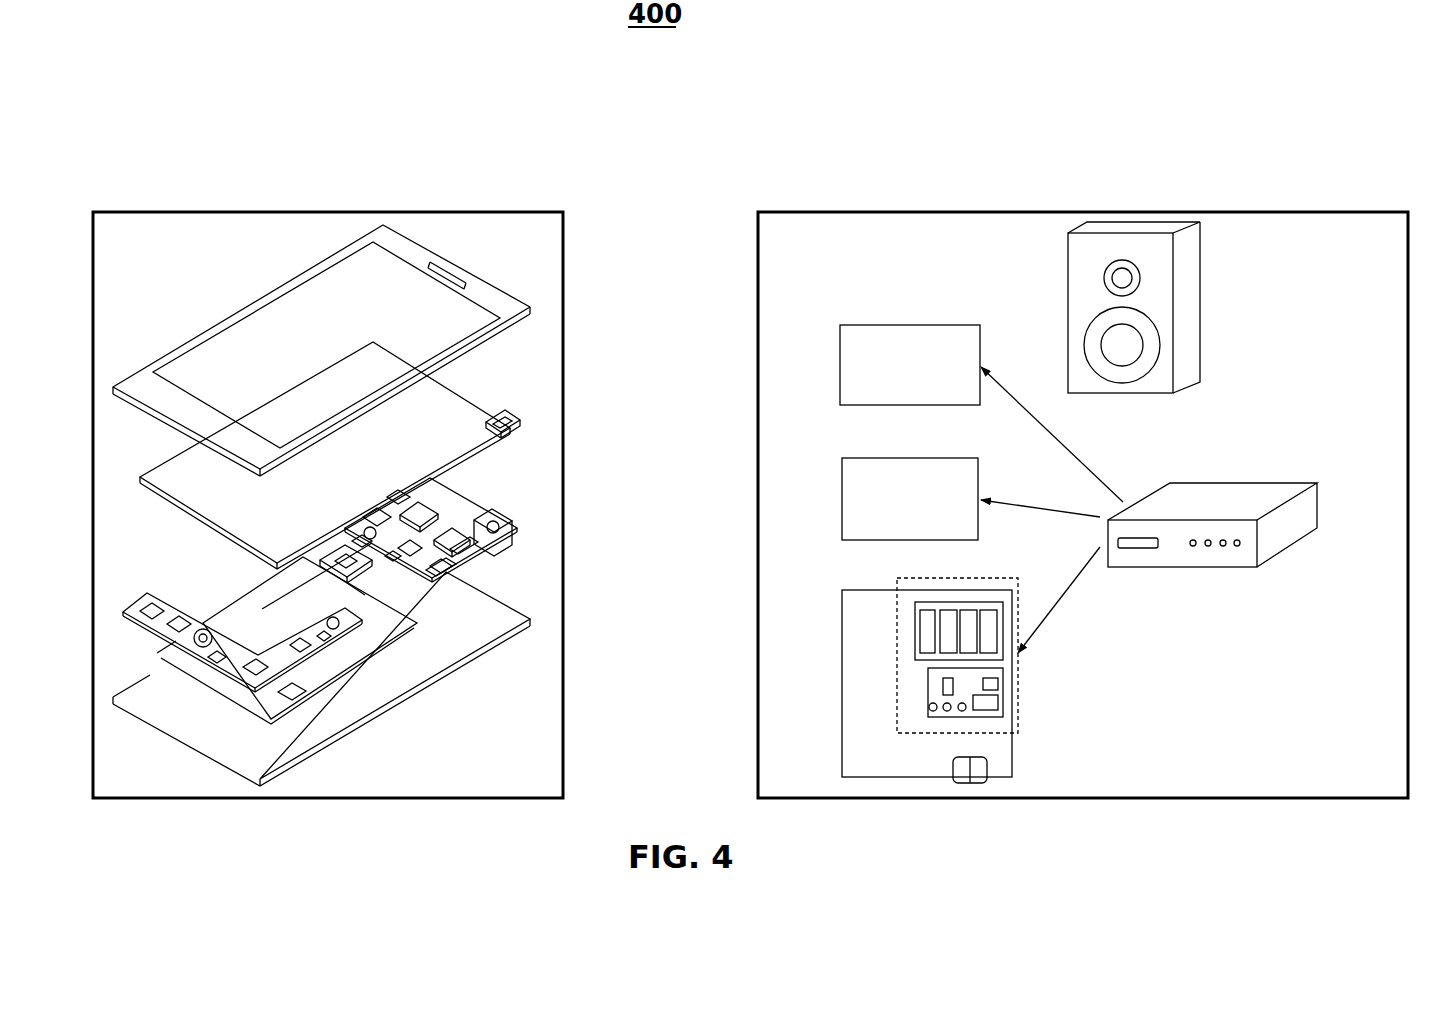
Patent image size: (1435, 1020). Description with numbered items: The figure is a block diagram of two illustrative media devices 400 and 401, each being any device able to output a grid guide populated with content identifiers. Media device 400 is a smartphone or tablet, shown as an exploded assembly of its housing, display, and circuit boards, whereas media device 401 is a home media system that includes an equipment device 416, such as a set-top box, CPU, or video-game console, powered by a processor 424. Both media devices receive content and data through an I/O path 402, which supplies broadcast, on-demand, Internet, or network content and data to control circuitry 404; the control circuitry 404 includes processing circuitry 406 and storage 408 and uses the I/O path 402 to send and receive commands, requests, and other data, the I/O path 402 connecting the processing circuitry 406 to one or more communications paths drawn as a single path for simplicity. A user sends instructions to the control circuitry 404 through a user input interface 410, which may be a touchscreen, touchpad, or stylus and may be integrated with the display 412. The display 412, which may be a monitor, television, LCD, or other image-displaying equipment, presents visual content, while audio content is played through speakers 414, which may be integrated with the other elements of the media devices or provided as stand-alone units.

The media device 400 is at (163, 168).
The media device 401 is at (1316, 151).
The I/O path 402 is at (195, 647).
The control circuitry 404 is at (895, 703).
The processing circuitry 406 is at (926, 690).
The storage 408 is at (914, 630).
The user input interface 410 is at (838, 361).
The display 412 is at (838, 498).
The speakers 414 is at (1066, 312).
The equipment device 416 is at (1236, 482).
The processor 424 is at (1013, 757).